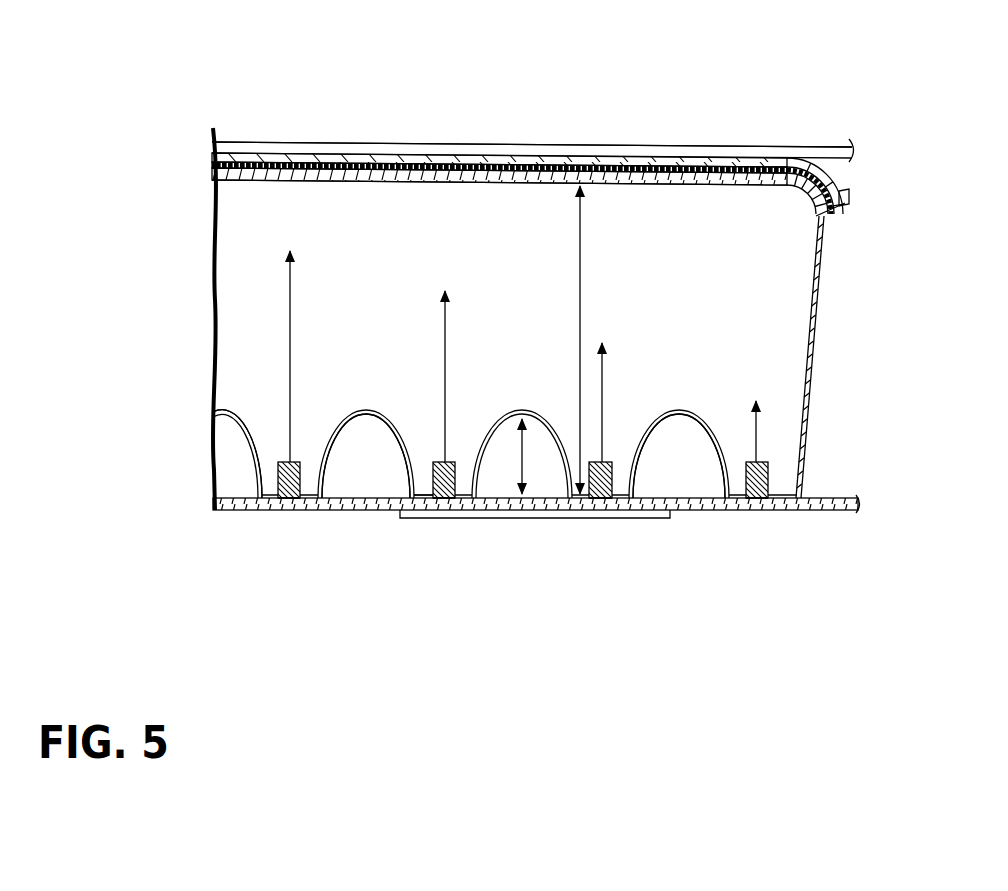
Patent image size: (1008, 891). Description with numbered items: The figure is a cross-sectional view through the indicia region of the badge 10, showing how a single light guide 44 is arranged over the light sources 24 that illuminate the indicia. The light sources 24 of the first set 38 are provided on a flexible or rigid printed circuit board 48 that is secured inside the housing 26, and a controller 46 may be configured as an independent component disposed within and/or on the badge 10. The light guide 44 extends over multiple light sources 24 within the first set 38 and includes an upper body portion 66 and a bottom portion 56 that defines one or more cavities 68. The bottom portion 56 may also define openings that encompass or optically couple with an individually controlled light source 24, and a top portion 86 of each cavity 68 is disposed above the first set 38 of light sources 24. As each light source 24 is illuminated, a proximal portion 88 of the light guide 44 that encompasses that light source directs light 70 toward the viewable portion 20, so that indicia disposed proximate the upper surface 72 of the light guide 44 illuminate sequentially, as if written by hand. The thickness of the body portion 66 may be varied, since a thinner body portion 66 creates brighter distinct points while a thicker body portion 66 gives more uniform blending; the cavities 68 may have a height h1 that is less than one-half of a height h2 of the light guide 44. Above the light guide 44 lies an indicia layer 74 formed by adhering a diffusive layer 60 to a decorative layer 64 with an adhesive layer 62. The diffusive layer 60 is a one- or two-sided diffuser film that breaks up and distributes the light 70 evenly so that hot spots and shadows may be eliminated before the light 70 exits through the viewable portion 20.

The badge 10 is at (412, 110).
The viewable portion 20 is at (300, 137).
The housing 26 is at (247, 152).
The indicia layer 74 is at (502, 140).
The upper surface 72 is at (250, 182).
The decorative layer 64 is at (643, 163).
The adhesive layer 62 is at (690, 168).
The diffusive layer 60 is at (725, 178).
The body portion 66 is at (748, 256).
The light guide 44 is at (237, 257).
The light 70 is at (445, 370).
The cavities 68 is at (354, 441).
The bottom portion 56 is at (272, 438).
The light sources 24 is at (292, 500).
The first set of light sources 38 is at (280, 510).
The top portion of cavity 86 is at (372, 424).
The proximal portion 88 is at (418, 482).
The controller 46 is at (520, 518).
The printed circuit board 48 is at (820, 505).
The height of cavities h1 is at (535, 456).
The height of light guide h2 is at (594, 340).